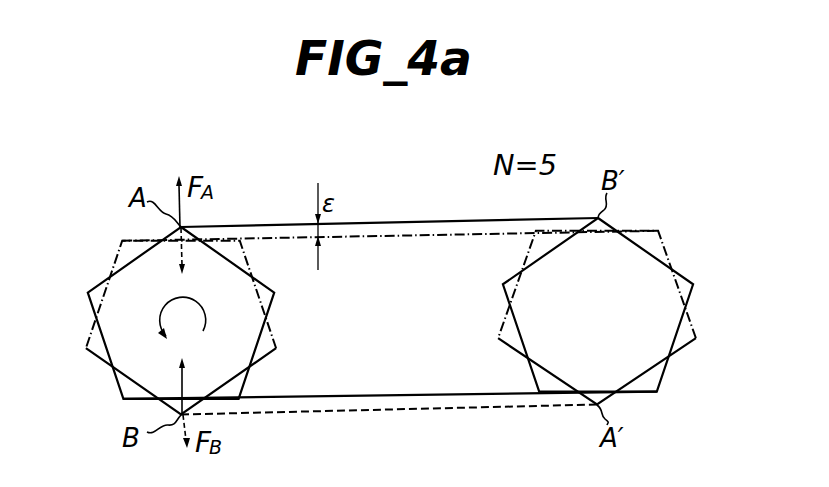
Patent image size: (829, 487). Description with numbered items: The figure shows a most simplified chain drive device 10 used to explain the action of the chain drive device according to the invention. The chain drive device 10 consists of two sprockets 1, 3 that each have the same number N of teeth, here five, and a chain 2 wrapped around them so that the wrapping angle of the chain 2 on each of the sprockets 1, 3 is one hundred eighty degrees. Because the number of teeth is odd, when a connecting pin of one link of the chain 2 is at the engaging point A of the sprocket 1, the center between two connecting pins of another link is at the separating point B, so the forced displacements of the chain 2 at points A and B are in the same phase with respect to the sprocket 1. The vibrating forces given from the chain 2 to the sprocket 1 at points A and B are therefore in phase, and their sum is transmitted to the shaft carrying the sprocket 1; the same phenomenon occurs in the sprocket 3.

The chain drive device 10 is at (663, 166).
The sprocket 1 is at (115, 250).
The chain 2 is at (399, 235).
The sprocket 3 is at (668, 268).